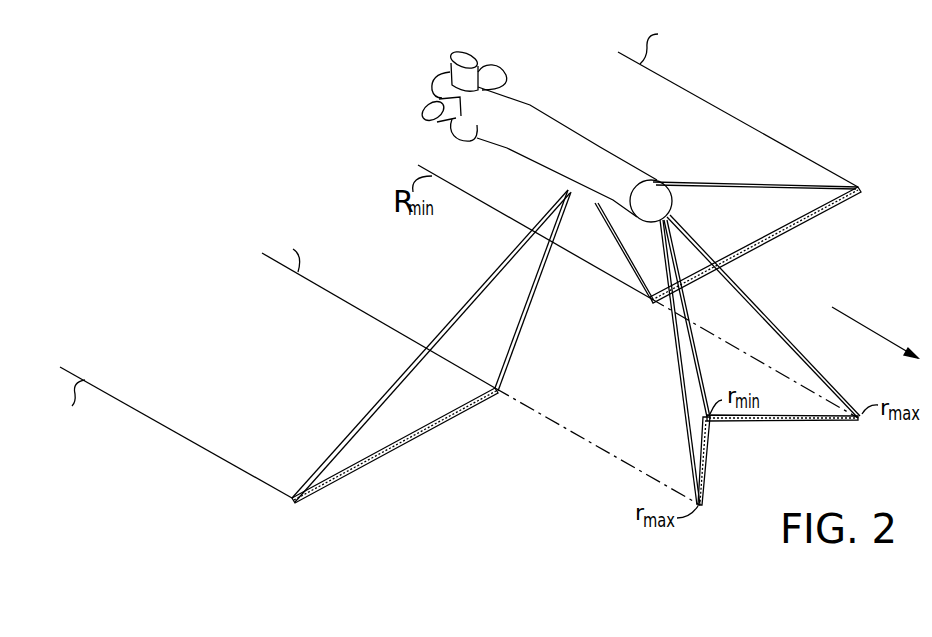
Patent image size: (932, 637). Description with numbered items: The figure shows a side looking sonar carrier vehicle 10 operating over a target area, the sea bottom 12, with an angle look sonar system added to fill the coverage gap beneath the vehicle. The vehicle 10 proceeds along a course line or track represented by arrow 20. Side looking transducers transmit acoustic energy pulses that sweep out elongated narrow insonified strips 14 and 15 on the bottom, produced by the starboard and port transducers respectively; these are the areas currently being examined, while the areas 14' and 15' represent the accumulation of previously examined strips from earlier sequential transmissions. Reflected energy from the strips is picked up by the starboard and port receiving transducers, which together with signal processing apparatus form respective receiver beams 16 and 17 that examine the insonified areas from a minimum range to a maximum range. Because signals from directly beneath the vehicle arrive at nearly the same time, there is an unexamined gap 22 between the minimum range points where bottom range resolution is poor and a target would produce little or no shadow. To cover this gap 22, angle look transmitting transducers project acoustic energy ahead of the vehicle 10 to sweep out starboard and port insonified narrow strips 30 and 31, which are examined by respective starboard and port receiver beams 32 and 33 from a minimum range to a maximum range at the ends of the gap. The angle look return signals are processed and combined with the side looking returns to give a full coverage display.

The carrier vehicle 10 is at (550, 130).
The sea bottom 12 is at (548, 468).
The insonified strip 14 is at (395, 445).
The previously examined areas 14' is at (176, 432).
The insonified strip 15 is at (755, 245).
The previously examined areas 15' is at (738, 103).
The receiver beam 16 is at (366, 417).
The receiver beam 17 is at (782, 183).
The arrow 20 is at (852, 316).
The unexamined gap 22 is at (339, 188).
The insonified narrow strip 30 is at (710, 457).
The insonified narrow strip 31 is at (763, 421).
The receiver beam 32 is at (688, 432).
The receiver beam 33 is at (822, 388).